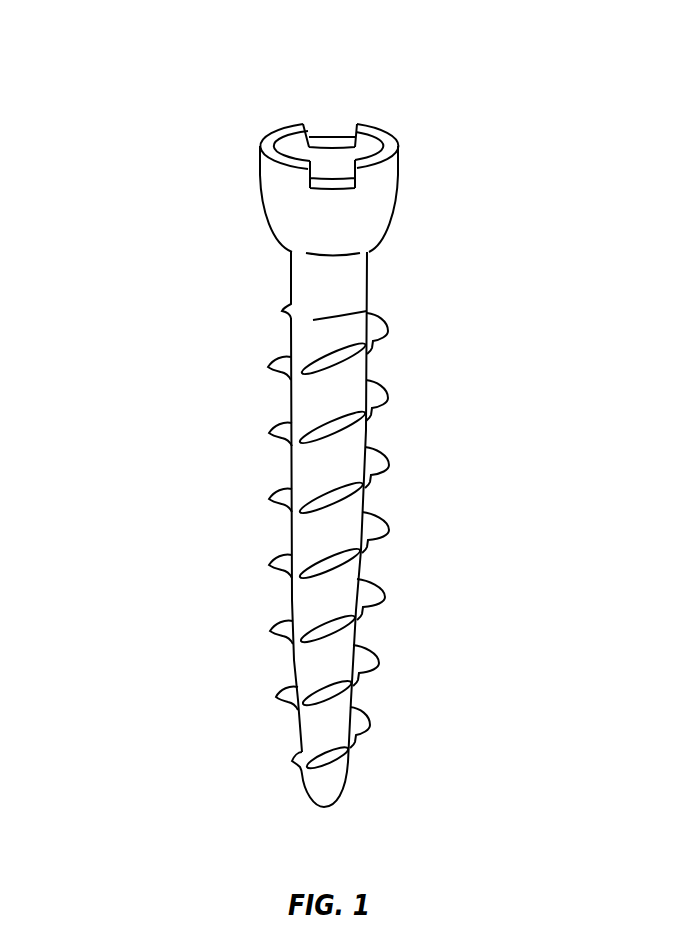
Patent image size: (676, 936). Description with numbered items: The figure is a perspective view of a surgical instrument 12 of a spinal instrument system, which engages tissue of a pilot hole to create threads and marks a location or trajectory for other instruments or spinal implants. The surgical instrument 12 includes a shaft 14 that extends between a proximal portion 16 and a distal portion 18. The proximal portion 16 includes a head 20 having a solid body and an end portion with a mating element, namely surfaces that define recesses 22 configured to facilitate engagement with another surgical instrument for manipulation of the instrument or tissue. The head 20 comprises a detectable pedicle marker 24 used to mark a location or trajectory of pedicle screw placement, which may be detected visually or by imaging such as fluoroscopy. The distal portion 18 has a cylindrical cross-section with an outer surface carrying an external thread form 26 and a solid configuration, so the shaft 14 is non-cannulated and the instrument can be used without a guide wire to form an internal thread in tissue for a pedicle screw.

The surgical instrument 12 is at (45, 36).
The shaft 14 is at (457, 488).
The proximal portion 16 is at (458, 176).
The distal portion 18 is at (441, 715).
The head 20 is at (184, 176).
The recesses 22 is at (311, 134).
The pedicle marker 24 is at (380, 183).
The threads 26 is at (201, 666).